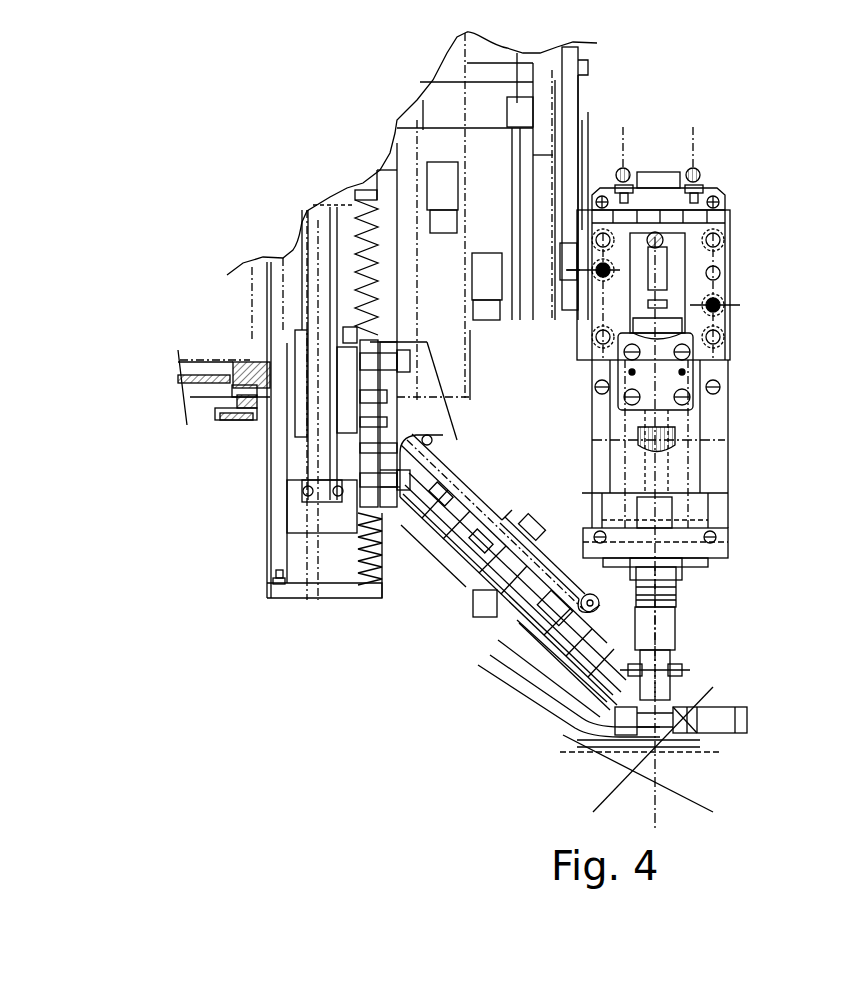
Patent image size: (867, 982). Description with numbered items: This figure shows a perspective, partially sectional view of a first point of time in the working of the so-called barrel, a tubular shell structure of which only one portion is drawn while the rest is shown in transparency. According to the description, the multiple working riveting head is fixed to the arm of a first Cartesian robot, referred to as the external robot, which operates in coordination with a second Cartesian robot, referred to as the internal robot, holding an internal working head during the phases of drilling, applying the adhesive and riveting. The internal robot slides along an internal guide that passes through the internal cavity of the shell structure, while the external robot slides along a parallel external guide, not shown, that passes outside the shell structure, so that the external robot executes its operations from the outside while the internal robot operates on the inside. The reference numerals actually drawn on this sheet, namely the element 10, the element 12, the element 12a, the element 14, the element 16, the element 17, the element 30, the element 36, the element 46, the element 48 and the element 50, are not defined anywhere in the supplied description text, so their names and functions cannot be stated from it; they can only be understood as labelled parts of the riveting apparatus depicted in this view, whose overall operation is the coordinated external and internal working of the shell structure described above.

The housing 10 is at (258, 527).
The arm 12 is at (453, 578).
The anvil / workpiece support 12a is at (690, 705).
The mounting plate 14 is at (567, 113).
The clamping block assembly 16 is at (741, 276).
The nozzle holder cylinder 17 is at (655, 624).
The plate 30 is at (372, 467).
The rod / column 36 is at (318, 233).
The cylinder on arm 46 is at (490, 500).
The lower guide 48 is at (578, 720).
The guide tubes 50 is at (497, 673).